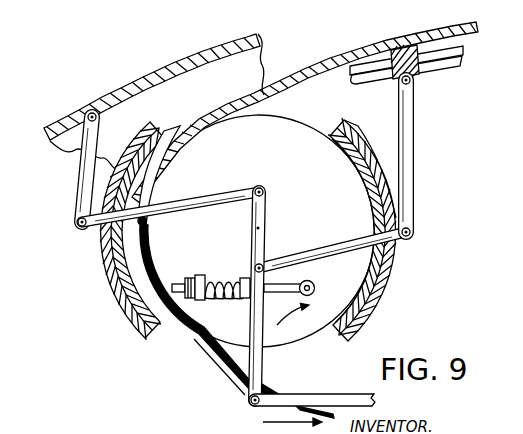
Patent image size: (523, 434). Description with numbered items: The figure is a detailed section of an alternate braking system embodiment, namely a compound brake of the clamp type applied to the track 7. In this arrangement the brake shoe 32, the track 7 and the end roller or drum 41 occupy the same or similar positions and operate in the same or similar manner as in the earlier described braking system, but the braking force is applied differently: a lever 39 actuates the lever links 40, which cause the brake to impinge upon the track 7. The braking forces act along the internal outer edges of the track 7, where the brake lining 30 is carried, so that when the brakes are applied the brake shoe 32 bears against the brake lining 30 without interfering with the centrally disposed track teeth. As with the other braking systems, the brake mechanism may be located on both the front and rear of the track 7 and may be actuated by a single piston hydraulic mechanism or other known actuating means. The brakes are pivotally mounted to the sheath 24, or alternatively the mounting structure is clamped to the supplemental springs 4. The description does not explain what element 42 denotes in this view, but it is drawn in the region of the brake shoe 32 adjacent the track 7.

The supplemental springs 4 is at (379, 48).
The track 7 is at (316, 56).
The sheath 24 is at (418, 70).
The brake lining 30 is at (158, 325).
The brake shoe 32 is at (130, 305).
The lever 39 is at (258, 360).
The lever links 40 is at (208, 197).
The end roller or drum 41 is at (362, 317).
The guide segment 42 is at (368, 266).